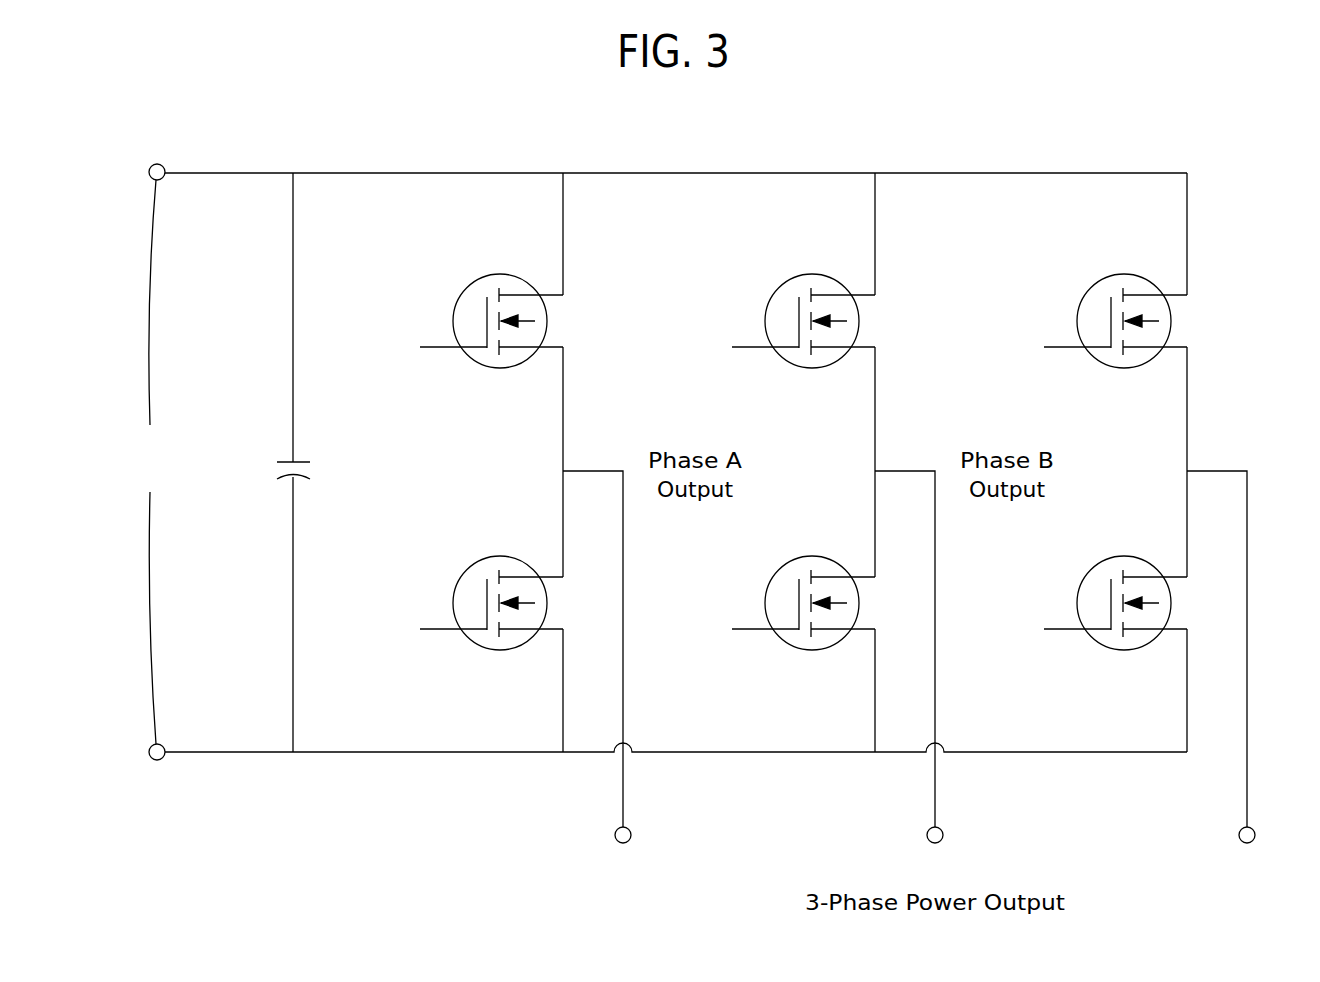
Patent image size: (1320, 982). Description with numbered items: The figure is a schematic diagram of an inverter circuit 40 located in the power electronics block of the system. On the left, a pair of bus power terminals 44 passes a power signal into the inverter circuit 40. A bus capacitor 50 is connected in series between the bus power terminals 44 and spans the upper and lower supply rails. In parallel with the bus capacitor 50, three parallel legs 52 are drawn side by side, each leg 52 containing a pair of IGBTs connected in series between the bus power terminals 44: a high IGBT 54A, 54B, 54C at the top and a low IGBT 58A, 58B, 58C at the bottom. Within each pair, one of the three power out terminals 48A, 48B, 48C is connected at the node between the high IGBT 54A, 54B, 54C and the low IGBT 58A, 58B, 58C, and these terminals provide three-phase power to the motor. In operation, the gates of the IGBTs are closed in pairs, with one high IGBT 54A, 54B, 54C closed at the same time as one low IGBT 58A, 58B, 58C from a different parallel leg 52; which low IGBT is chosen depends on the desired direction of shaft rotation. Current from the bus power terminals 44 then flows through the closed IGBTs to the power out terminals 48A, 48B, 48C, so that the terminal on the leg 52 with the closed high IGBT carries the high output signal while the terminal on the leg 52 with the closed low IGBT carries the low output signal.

The inverter circuit 40 is at (305, 100).
The bus power terminals 44 is at (146, 462).
The bus capacitor 50 is at (277, 470).
The parallel legs 52 is at (564, 221).
The high IGBT 54A is at (497, 369).
The high IGBT 54B is at (809, 369).
The high IGBT 54C is at (1121, 369).
The low IGBT 58A is at (499, 556).
The low IGBT 58B is at (811, 556).
The low IGBT 58C is at (1123, 556).
The power out terminal 48A is at (614, 836).
The power out terminal 48B is at (926, 836).
The power out terminal 48C is at (1238, 836).